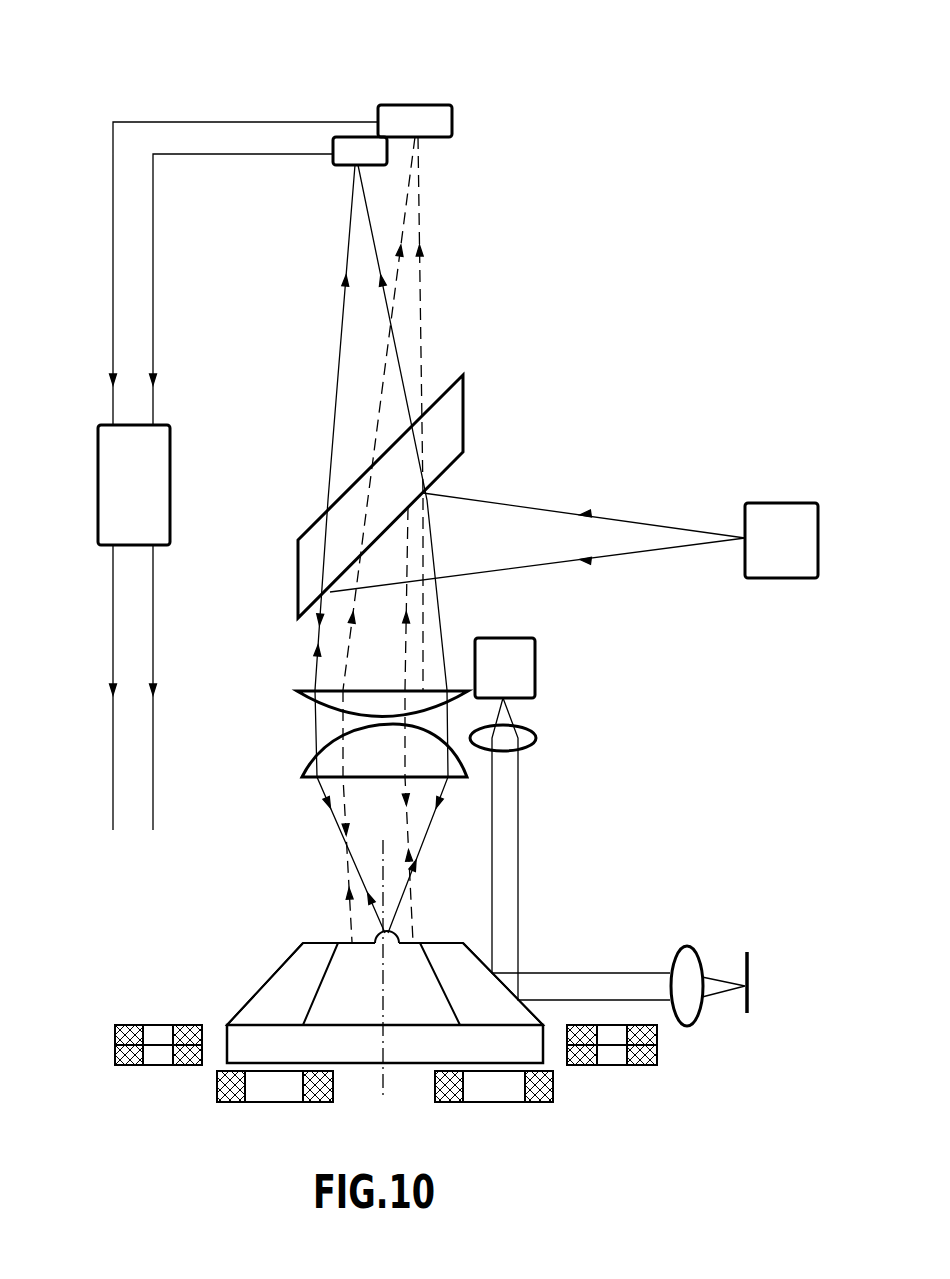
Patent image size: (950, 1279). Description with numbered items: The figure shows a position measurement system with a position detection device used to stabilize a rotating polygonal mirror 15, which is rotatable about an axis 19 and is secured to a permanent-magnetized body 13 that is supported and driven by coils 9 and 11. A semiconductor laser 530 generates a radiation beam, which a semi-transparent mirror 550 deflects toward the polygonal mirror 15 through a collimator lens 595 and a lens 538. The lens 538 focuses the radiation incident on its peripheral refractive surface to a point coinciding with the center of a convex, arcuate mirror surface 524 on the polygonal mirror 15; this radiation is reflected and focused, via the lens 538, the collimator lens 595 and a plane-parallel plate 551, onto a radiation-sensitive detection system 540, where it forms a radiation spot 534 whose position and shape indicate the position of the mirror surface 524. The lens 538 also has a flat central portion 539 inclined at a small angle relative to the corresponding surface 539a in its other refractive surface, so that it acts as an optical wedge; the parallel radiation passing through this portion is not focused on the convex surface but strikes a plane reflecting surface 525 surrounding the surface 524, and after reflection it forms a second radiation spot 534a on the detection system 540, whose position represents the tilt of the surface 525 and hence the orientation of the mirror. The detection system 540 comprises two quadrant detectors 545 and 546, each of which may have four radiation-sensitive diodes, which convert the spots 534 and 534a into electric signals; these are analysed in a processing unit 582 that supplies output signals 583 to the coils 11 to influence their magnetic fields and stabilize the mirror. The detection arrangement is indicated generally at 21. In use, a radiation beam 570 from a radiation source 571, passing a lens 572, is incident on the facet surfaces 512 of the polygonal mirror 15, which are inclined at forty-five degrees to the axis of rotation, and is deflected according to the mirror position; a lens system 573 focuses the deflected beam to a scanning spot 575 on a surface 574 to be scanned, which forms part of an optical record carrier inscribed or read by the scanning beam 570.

The laser beam generating unit 21 is at (433, 86).
The radiation-sensitive detection system 540 is at (377, 132).
The quadrant detector 545 is at (347, 167).
The quadrant detector 546 is at (445, 141).
The radiation spot 534a is at (422, 141).
The radiation spot 534 is at (356, 168).
The plane-parallel plate 551 is at (447, 413).
The semi-transparent mirror 550 is at (450, 471).
The semiconductor laser 530 is at (783, 568).
The processing unit 582 is at (105, 496).
The output signals 583 is at (113, 668).
The collimator lens 595 is at (337, 702).
The flat central portion 539 is at (327, 713).
The lens 538 is at (330, 760).
The corresponding surface 539a is at (383, 780).
The arcuate mirror surface 524 is at (377, 927).
The facet surfaces 512 is at (478, 950).
The reflecting surface 525 is at (333, 987).
The polygonal mirror 15 is at (262, 957).
The permanent-magnetized body 13 is at (233, 1048).
The coils 11 is at (117, 1061).
The coils 9 is at (232, 1103).
The axis 19 is at (386, 1077).
The radiation source 571 is at (523, 677).
The collimating lens 572 is at (536, 742).
The radiation beam 570 is at (500, 835).
The lens system 573 is at (687, 977).
The surface to be scanned 574 is at (743, 970).
The scanning spot 575 is at (743, 1003).